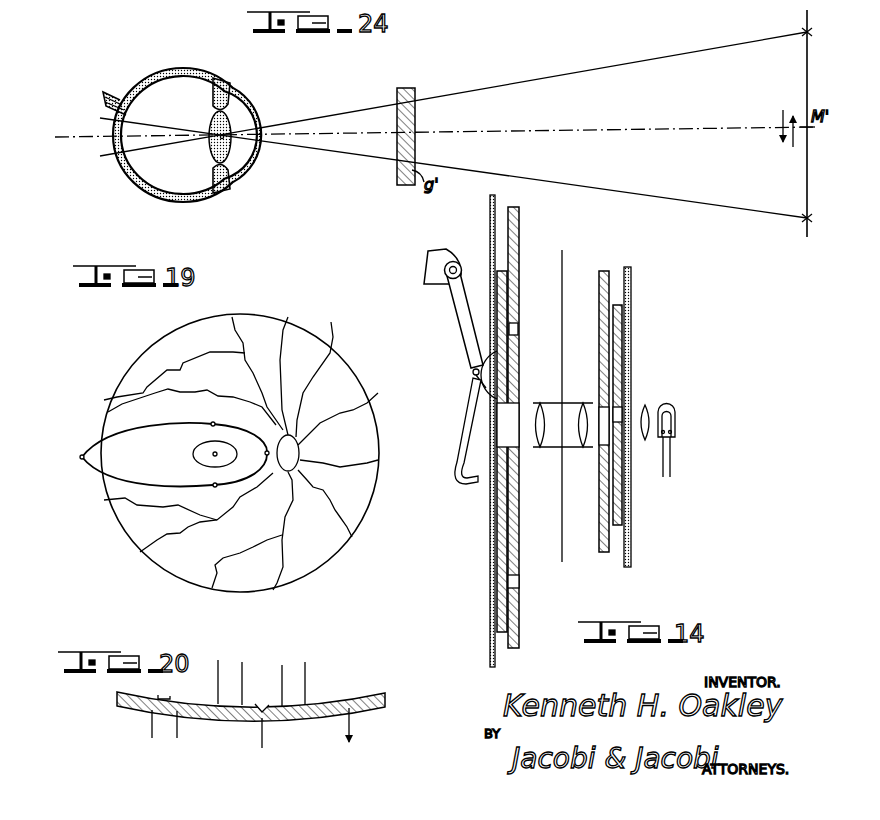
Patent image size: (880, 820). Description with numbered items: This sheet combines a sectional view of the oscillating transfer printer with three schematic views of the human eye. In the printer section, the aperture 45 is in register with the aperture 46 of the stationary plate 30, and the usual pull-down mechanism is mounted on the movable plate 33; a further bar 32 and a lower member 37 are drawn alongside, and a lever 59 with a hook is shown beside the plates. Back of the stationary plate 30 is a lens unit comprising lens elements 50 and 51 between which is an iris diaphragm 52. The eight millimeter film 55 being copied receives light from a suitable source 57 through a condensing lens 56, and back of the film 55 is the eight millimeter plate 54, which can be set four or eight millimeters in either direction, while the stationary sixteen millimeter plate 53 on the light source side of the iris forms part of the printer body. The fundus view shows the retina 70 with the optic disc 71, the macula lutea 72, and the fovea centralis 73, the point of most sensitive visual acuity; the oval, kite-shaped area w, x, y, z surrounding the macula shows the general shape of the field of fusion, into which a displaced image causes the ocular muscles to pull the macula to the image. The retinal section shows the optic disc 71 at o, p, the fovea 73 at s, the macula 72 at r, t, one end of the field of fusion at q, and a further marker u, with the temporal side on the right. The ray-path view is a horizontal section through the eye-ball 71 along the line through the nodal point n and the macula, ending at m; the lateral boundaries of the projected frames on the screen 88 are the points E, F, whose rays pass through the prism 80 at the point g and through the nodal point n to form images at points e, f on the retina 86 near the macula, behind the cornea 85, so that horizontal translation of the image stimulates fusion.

In FIG. 24, the optic disc 71 is at (122, 104).
In FIG. 19, the optic disc 71 is at (299, 453).
In FIG. 20, the optic disc 71 is at (165, 726).
In FIG. 24, the cornea 85 is at (256, 160).
In FIG. 24, the retina 86 is at (234, 140).
In FIG. 24, the prism 80 is at (410, 92).
In FIG. 24, the screen 88 is at (804, 82).
In FIG. 24, the nodal point n is at (228, 130).
In FIG. 24, the retinal image point e is at (104, 119).
In FIG. 24, the retinal image point f is at (104, 156).
In FIG. 24, the section line point m is at (433, 137).
In FIG. 24, the prism ray point g is at (415, 106).
In FIG. 24, the lateral boundary point F is at (816, 24).
In FIG. 24, the lateral boundary point E is at (816, 234).
In FIG. 19, the retina 70 is at (312, 346).
In FIG. 19, the macula lutea 72 is at (200, 447).
In FIG. 20, the macula lutea 72 is at (255, 718).
In FIG. 19, the fovea centralis 73 is at (212, 456).
In FIG. 20, the fovea centralis 73 is at (262, 702).
In FIG. 19, the fusion field corner x is at (212, 421).
In FIG. 19, the fusion field corner y is at (81, 455).
In FIG. 19, the fusion field corner z is at (214, 488).
In FIG. 19, the fusion field corner w is at (260, 481).
In FIG. 20, the optic disc edge point o is at (146, 737).
In FIG. 20, the optic disc edge point p is at (172, 738).
In FIG. 20, the fusion field end point q is at (212, 702).
In FIG. 20, the macula edge point r is at (237, 702).
In FIG. 20, the fovea point s is at (261, 745).
In FIG. 20, the macula edge point t is at (274, 685).
In FIG. 20, the retina point u is at (306, 682).
In FIG. 14, the stationary plate 30 is at (518, 295).
In FIG. 14, the slide bar 32 is at (517, 330).
In FIG. 14, the movable plate 33 is at (518, 268).
In FIG. 14, the guide strip 37 is at (492, 606).
In FIG. 14, the aperture 45 is at (503, 427).
In FIG. 14, the aperture 46 is at (515, 431).
In FIG. 14, the lens element 50 is at (538, 400).
In FIG. 14, the lens element 51 is at (578, 400).
In FIG. 14, the iris diaphragm 52 is at (566, 274).
In FIG. 14, the stationary sixteen millimeter plate 53 is at (600, 326).
In FIG. 14, the eight millimeter plate 54 is at (623, 320).
In FIG. 14, the eight millimeter film 55 is at (630, 530).
In FIG. 14, the condensing lens 56 is at (647, 402).
In FIG. 14, the light source 57 is at (672, 406).
In FIG. 14, the lever 59 is at (462, 310).